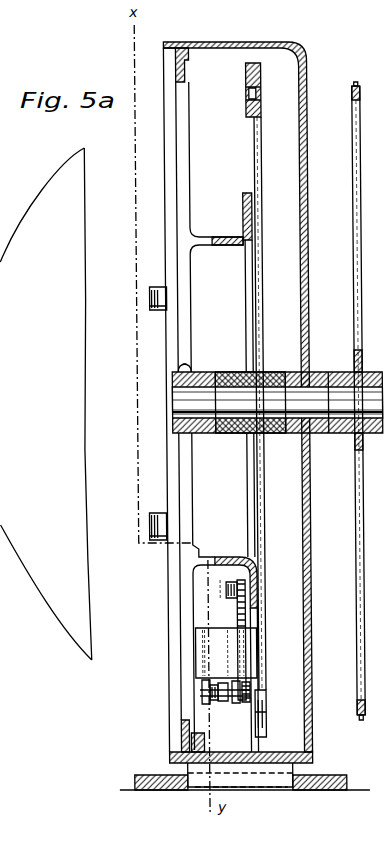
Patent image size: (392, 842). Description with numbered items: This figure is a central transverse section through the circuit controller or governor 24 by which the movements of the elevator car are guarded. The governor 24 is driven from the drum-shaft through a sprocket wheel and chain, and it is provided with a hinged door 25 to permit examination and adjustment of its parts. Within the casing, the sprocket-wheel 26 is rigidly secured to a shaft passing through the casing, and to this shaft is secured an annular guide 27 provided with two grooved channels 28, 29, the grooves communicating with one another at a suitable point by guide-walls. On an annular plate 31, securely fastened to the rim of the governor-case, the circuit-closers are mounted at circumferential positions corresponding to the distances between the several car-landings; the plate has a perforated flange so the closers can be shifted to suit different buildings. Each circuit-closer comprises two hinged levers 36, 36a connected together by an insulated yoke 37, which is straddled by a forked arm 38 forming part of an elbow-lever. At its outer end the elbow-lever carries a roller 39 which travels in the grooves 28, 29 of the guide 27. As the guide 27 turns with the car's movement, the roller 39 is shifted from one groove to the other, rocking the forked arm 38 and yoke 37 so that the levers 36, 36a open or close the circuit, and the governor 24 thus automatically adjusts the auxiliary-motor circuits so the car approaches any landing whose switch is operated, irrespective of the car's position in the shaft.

The governor 24 is at (306, 230).
The hinged door 25 is at (46, 404).
The sprocket-wheel 26 is at (359, 152).
The annular guide 27 is at (260, 152).
The grooved channel 28 is at (250, 77).
The grooved channel 29 is at (248, 101).
The annular plate 31 is at (188, 172).
The hinged lever 36 is at (190, 655).
The hinged lever 36a is at (223, 600).
The insulated yoke 37 is at (220, 680).
The forked arm 38 is at (212, 704).
The roller 39 is at (249, 730).